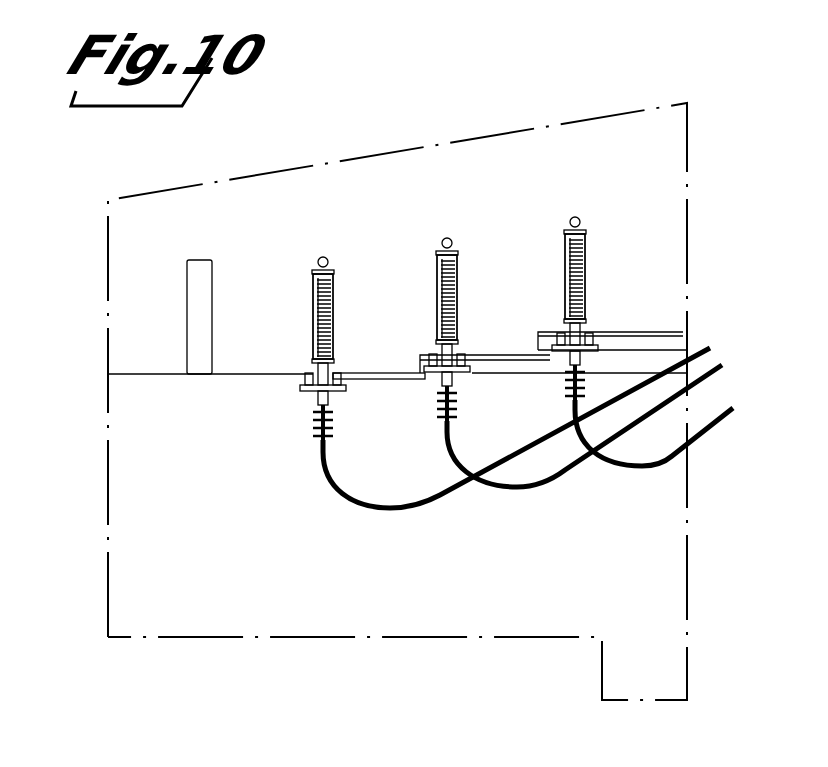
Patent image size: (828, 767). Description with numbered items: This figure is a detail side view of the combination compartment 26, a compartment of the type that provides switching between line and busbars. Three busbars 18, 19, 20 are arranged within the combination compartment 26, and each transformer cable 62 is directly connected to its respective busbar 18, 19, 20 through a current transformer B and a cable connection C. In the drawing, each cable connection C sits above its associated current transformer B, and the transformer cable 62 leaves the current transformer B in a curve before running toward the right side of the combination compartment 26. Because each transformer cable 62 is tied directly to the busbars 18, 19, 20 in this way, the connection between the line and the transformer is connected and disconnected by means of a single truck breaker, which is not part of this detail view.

The busbar 18 is at (323, 256).
The busbar 19 is at (446, 237).
The busbar 20 is at (574, 216).
The combination compartment 26 is at (100, 233).
The transformer cable 62 is at (447, 493).
The current transformer B is at (335, 423).
The cable connection C is at (334, 302).